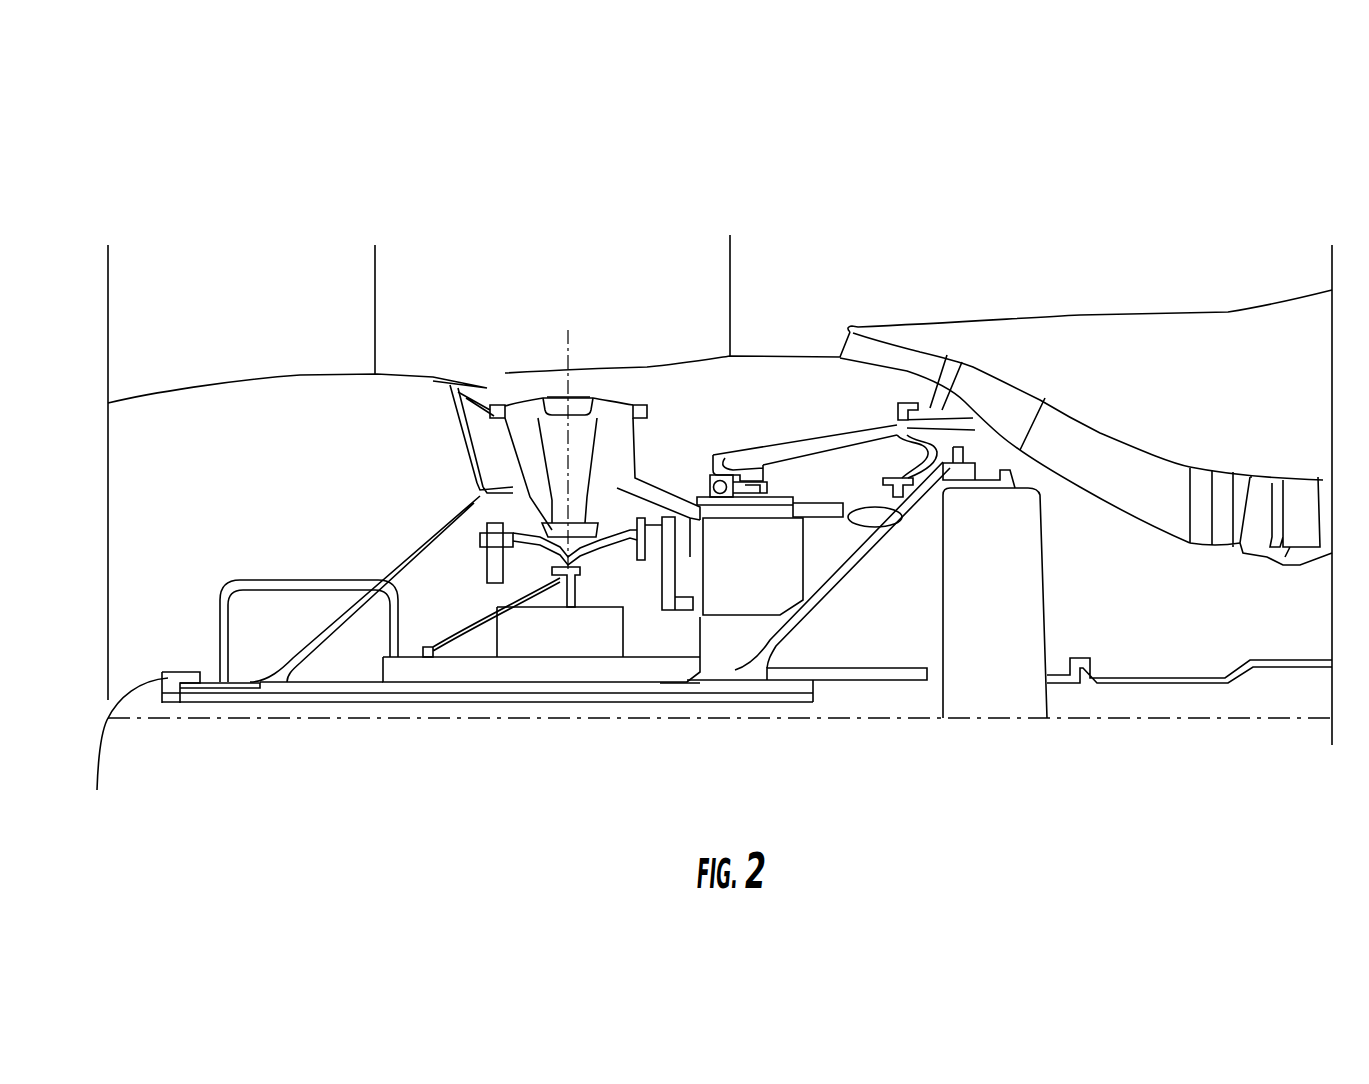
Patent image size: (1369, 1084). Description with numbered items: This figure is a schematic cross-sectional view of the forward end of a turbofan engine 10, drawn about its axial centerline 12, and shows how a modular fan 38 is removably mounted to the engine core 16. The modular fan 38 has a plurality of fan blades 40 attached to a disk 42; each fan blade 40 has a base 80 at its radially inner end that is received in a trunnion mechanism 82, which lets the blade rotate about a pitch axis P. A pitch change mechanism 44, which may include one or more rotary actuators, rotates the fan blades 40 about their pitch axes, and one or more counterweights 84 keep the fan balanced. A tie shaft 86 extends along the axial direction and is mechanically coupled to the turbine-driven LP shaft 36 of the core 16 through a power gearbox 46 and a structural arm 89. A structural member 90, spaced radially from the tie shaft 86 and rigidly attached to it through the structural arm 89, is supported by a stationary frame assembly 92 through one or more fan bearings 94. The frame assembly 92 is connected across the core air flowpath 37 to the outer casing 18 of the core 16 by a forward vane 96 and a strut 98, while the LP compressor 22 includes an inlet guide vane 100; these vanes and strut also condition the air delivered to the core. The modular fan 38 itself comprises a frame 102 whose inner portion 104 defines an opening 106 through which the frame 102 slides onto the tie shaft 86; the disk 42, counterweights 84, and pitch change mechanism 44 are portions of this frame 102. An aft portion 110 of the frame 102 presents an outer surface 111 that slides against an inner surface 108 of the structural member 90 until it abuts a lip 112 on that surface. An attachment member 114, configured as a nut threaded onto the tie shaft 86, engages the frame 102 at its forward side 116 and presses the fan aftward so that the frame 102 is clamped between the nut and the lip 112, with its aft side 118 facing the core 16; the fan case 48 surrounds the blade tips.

The turbofan engine 10 is at (1090, 170).
The axial centerline 12 is at (1222, 720).
The core 16 is at (1117, 272).
The outer casing 18 is at (1228, 311).
The LP compressor 22 is at (1281, 450).
The LP shaft 36 is at (1197, 676).
The core air flowpath 37 is at (1268, 480).
The modular fan 38 is at (277, 268).
The fan blade 40 is at (735, 276).
The disk 42 is at (625, 448).
The pitch change mechanism 44 is at (543, 647).
The power gearbox 46 is at (1032, 575).
The nacelle 48 is at (188, 385).
The base 80 is at (617, 348).
The trunnion mechanism 82 is at (556, 440).
The counterweight 84 is at (832, 555).
The tie shaft 86 is at (598, 697).
The structural arm 89 is at (825, 594).
The structural member 90 is at (813, 495).
The frame assembly 92 is at (868, 408).
The fan bearing 94 is at (770, 475).
The forward vane 96 is at (888, 343).
The strut 98 is at (925, 405).
The inlet guide vane 100 is at (1107, 456).
The frame 102 is at (400, 531).
The inner portion 104 is at (238, 692).
The opening 106 is at (193, 700).
The inner surface 108 is at (846, 520).
The aft portion 110 is at (797, 500).
The outer surface 111 is at (831, 497).
The lip 112 is at (885, 521).
The attachment member 114 is at (124, 749).
The forward side 116 is at (297, 530).
The aft side 118 is at (780, 627).
The pitch axis P is at (566, 365).